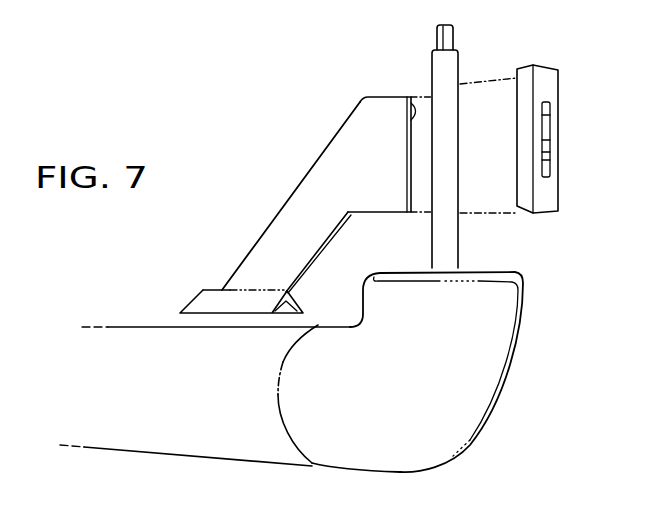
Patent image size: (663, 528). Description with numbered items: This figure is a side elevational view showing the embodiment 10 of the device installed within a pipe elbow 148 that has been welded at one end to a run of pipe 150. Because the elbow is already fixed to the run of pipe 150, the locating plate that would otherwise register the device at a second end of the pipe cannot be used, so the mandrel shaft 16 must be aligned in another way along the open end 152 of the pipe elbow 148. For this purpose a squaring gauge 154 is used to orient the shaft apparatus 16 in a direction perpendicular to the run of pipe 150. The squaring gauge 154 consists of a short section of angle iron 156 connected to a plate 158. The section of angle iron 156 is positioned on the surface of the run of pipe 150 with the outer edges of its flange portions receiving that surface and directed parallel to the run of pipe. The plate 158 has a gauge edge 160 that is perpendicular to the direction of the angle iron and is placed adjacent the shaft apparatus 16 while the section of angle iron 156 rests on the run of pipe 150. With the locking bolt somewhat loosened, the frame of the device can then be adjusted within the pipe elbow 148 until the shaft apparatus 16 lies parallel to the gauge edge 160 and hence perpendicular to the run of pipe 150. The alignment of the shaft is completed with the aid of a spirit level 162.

The embodiment 10 is at (433, 144).
The mandrel shaft 16 is at (429, 79).
The pipe elbow 148 is at (517, 312).
The run of pipe 150 is at (138, 342).
The open end 152 is at (507, 275).
The squaring gauge 154 is at (302, 180).
The section of angle iron 156 is at (203, 288).
The plate 158 is at (352, 143).
The gauge edge 160 is at (407, 95).
The spirit level 162 is at (561, 78).